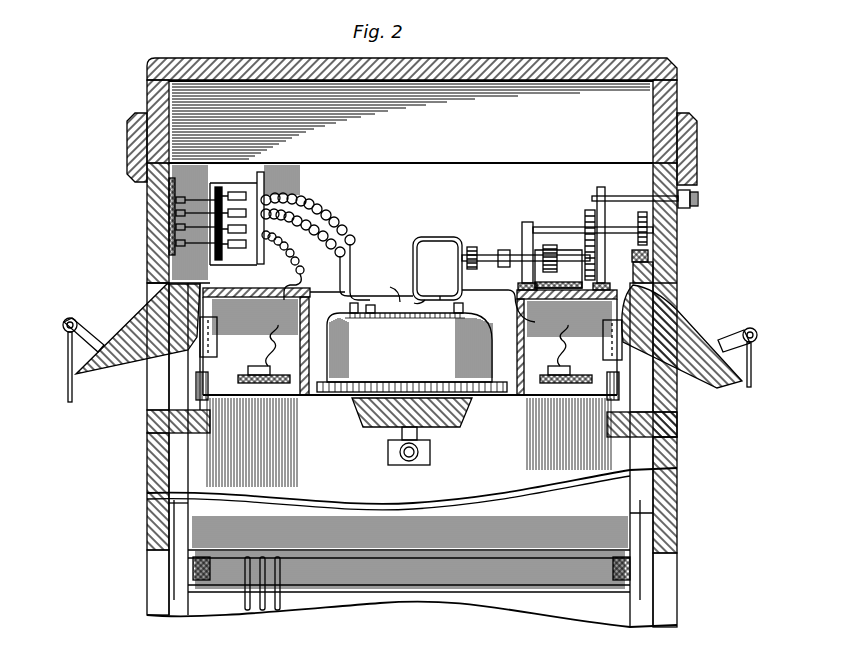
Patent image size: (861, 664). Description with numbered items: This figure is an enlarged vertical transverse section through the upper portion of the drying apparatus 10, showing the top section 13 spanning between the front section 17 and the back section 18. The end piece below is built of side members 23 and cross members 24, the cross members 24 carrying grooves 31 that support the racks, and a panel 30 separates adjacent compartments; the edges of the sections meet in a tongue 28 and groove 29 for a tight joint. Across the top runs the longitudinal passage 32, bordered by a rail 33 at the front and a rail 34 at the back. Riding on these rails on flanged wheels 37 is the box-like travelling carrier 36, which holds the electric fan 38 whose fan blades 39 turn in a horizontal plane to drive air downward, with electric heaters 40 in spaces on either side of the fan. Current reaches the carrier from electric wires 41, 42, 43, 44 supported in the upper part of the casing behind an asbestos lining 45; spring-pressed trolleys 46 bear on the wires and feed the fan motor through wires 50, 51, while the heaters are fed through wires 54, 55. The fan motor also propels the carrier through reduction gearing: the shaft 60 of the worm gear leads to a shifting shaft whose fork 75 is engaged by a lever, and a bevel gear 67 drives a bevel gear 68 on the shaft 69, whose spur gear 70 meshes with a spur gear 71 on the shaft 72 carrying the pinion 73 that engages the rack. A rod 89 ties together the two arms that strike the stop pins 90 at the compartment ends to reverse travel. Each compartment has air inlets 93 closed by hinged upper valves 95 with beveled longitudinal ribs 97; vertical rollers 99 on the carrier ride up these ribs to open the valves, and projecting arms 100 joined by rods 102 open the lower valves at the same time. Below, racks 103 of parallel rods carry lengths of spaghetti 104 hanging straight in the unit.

The apparatus 10 is at (697, 71).
The top section 13 is at (686, 96).
The front section 17 is at (156, 615).
The back section 18 is at (660, 626).
The side members 23 is at (169, 567).
The cross members 24 is at (477, 543).
The tongue 28 is at (147, 517).
The groove 29 is at (147, 502).
The panel 30 is at (543, 605).
The grooves 31 is at (427, 577).
The longitudinal passage 32 is at (360, 488).
The rail 33 is at (180, 432).
The rail 34 is at (660, 432).
The travelling carrier 36 is at (480, 252).
The flanged wheels 37 is at (200, 393).
The electric fan 38 is at (368, 437).
The fan blades 39 is at (427, 423).
The electric heaters 40 is at (270, 372).
The electric wire 41 is at (176, 200).
The electric wire 42 is at (176, 212).
The electric wire 43 is at (176, 226).
The electric wire 44 is at (176, 243).
The asbestos lining 45 is at (147, 168).
The trolleys 46 is at (205, 186).
The wire 50 is at (317, 212).
The wire 51 is at (323, 226).
The wire 54 is at (293, 264).
The wire 55 is at (292, 280).
The shaft 60 is at (446, 240).
The bevel gear 67 is at (530, 232).
The bevel gear 68 is at (548, 243).
The shaft 69 is at (577, 258).
The spur gear 70 is at (655, 273).
The spur gear 71 is at (587, 210).
The shaft 72 is at (543, 240).
The pinion 73 is at (648, 232).
The fork 75 is at (648, 252).
The rod 89 is at (583, 200).
The stop pins 90 is at (699, 151).
The air inlets 93 is at (157, 392).
The upper valves 95 is at (110, 335).
The longitudinal ribs 97 is at (147, 304).
The vertical rollers 99 is at (200, 350).
The projecting arms 100 is at (80, 338).
The rods 102 is at (68, 361).
The racks 103 is at (228, 572).
The lengths of spaghetti 104 is at (280, 600).